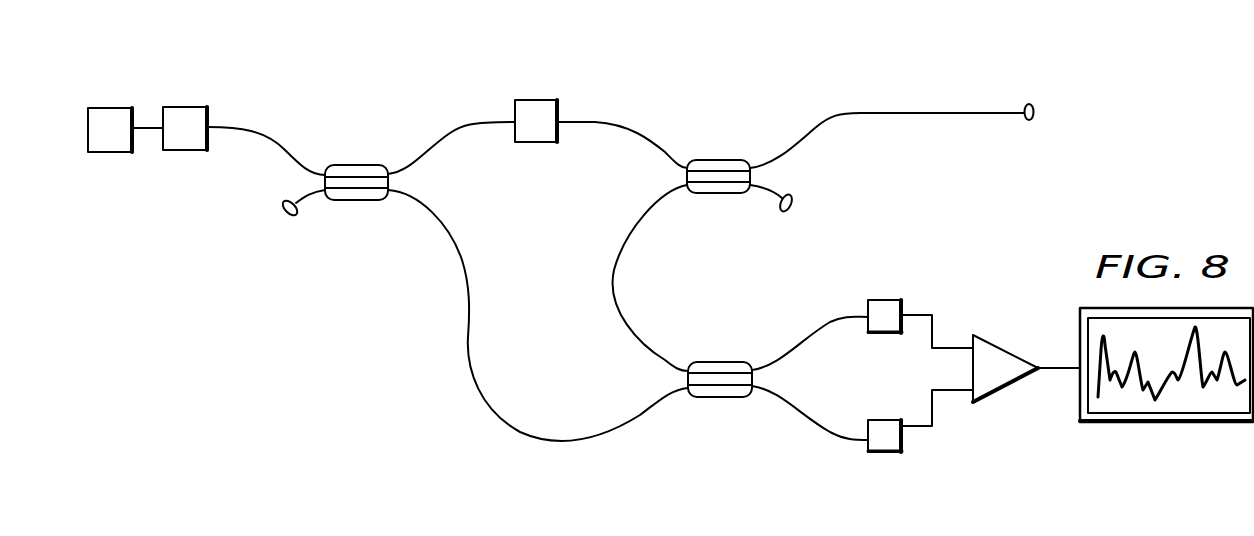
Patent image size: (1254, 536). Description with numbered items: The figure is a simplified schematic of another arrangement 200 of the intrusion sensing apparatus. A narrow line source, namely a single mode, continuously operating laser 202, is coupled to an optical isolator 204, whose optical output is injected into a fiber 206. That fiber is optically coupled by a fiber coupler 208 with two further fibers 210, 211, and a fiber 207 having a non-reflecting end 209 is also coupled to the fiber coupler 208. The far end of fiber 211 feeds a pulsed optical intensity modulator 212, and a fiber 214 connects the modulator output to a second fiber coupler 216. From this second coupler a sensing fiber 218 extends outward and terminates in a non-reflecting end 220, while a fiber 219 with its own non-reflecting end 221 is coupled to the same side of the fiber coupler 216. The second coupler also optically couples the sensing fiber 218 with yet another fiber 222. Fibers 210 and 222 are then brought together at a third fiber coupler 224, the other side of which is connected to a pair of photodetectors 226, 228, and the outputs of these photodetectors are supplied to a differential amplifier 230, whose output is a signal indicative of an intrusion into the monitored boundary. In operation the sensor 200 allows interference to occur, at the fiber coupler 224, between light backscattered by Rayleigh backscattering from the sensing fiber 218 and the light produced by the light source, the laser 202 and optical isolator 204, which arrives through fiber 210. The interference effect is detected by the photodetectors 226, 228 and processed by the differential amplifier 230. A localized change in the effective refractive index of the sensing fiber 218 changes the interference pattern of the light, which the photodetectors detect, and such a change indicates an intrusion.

The arrangement of the intrusion sensing apparatus 200 is at (1000, 174).
The laser 202 is at (107, 108).
The optical isolator 204 is at (179, 107).
The fiber 206 is at (257, 129).
The fiber 207 is at (297, 197).
The fiber coupler 208 is at (355, 201).
The non-reflecting end 209 is at (289, 218).
The fiber 210 is at (462, 240).
The fiber 211 is at (449, 132).
The pulsed optical intensity modulator 212 is at (533, 100).
The fiber 214 is at (618, 126).
The second fiber coupler 216 is at (728, 160).
The sensing fiber 218 is at (857, 114).
The fiber 219 is at (778, 191).
The non-reflecting end 220 is at (1034, 112).
The non-reflecting end 221 is at (788, 211).
The fiber 222 is at (638, 216).
The third fiber coupler 224 is at (730, 398).
The photodetector 226 is at (867, 306).
The photodetector 228 is at (867, 446).
The differential amplifier 230 is at (1010, 352).